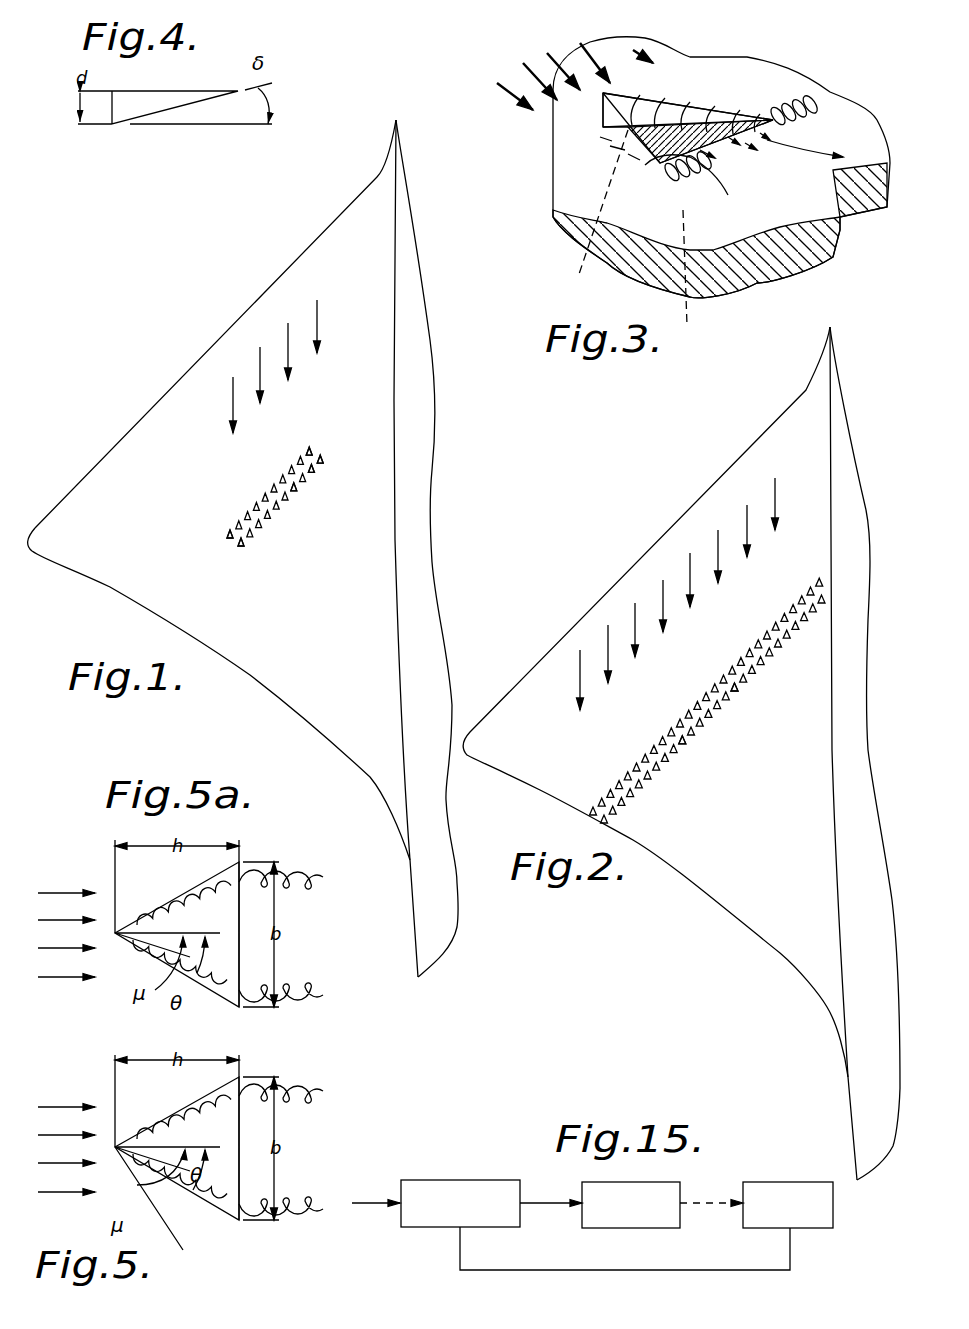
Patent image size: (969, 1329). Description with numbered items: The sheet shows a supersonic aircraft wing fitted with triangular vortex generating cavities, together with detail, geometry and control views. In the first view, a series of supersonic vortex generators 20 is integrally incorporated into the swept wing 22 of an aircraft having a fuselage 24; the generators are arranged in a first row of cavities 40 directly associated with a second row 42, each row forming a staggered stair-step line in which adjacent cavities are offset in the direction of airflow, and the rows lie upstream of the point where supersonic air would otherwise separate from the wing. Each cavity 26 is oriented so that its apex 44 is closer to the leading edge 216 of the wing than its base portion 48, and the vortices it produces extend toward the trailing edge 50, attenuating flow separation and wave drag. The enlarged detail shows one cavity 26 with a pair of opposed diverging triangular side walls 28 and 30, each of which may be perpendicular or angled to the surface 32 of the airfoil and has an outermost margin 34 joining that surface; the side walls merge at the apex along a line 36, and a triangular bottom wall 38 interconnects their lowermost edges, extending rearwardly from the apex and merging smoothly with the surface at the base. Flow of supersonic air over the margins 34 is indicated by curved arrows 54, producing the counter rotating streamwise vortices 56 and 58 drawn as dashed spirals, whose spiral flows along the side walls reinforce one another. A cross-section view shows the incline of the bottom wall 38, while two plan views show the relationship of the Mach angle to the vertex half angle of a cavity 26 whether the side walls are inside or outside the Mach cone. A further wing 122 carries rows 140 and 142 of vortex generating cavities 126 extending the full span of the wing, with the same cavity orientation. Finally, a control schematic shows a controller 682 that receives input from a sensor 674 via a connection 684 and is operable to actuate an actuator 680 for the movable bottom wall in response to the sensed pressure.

In FIG. 1, the series of supersonic vortex generators 20 is at (262, 483).
In FIG. 3, the swept wing 22 is at (817, 80).
In FIG. 1, the swept wing 22 is at (219, 490).
In FIG. 1, the fuselage 24 is at (412, 283).
In FIG. 4, the triangular vortex generating cavity 26 is at (205, 83).
In FIG. 3, the triangular vortex generating cavity 26 is at (627, 103).
In FIG. 5A, the triangular vortex generating cavity 26 is at (157, 903).
In FIG. 5, the triangular vortex generating cavity 26 is at (157, 1118).
In FIG. 3, the side wall 28 is at (592, 214).
In FIG. 3, the side wall 30 is at (697, 110).
In FIG. 3, the surface 32 is at (747, 80).
In FIG. 3, the outermost margin 34 is at (617, 97).
In FIG. 3, the line 36 is at (603, 110).
In FIG. 3, the triangular bottom wall 38 is at (716, 178).
In FIG. 1, the first row of cavities 40 is at (317, 443).
In FIG. 1, the second row of cavities 42 is at (323, 483).
In FIG. 3, the apex 44 is at (600, 90).
In FIG. 1, the apex 44 is at (320, 465).
In FIG. 3, the base portion 48 is at (717, 150).
In FIG. 1, the base portion 48 is at (297, 490).
In FIG. 1, the trailing edge 50 is at (280, 700).
In FIG. 3, the curved arrows 54 is at (703, 107).
In FIG. 3, the vortex 56 is at (693, 277).
In FIG. 3, the vortex 58 is at (813, 110).
In FIG. 2, the wing 122 is at (663, 513).
In FIG. 2, the vortex generating cavity 126 is at (733, 684).
In FIG. 2, the row of vortex generating cavities 140 is at (685, 697).
In FIG. 2, the row of vortex generating cavities 142 is at (686, 748).
In FIG. 1, the leading edge 216 is at (263, 290).
In FIG. 15, the sensor 674 is at (812, 1190).
In FIG. 15, the actuator 680 is at (598, 1220).
In FIG. 15, the controller 682 is at (478, 1188).
In FIG. 15, the connection 684 is at (590, 1270).